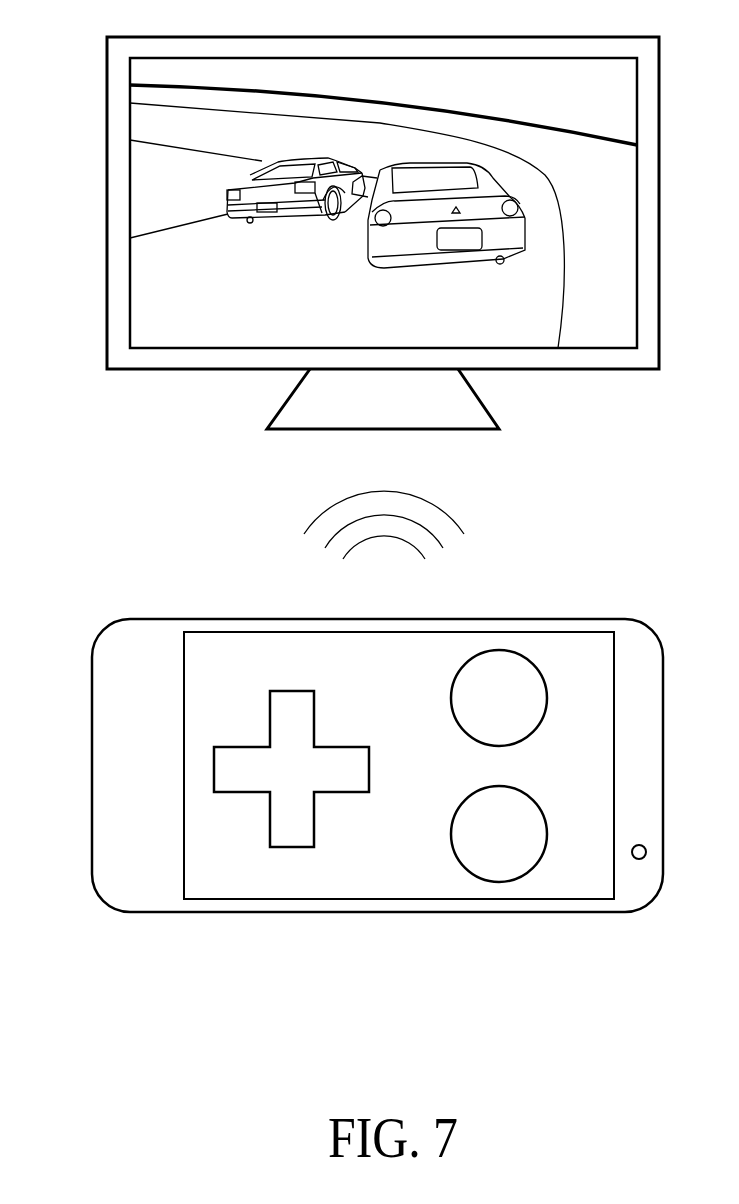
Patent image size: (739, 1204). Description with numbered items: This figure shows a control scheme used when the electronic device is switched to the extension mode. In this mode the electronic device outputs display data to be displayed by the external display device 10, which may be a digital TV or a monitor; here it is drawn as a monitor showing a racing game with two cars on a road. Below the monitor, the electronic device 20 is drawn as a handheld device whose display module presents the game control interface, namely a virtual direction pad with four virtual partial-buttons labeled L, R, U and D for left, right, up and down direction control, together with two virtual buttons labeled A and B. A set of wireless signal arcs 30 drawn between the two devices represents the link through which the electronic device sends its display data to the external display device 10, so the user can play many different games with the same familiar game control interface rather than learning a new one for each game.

The external display device 10 is at (107, 127).
The mobile device (controller) 20 is at (98, 648).
The wireless connection 30 is at (462, 532).